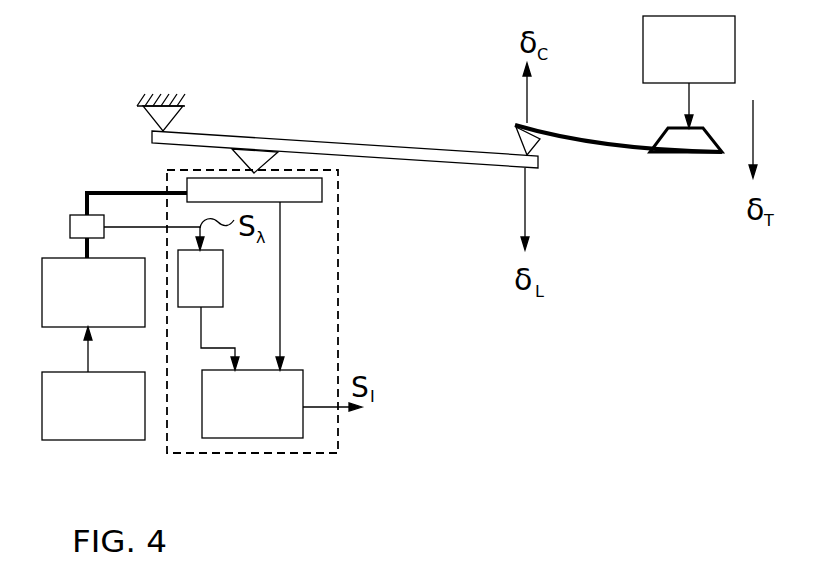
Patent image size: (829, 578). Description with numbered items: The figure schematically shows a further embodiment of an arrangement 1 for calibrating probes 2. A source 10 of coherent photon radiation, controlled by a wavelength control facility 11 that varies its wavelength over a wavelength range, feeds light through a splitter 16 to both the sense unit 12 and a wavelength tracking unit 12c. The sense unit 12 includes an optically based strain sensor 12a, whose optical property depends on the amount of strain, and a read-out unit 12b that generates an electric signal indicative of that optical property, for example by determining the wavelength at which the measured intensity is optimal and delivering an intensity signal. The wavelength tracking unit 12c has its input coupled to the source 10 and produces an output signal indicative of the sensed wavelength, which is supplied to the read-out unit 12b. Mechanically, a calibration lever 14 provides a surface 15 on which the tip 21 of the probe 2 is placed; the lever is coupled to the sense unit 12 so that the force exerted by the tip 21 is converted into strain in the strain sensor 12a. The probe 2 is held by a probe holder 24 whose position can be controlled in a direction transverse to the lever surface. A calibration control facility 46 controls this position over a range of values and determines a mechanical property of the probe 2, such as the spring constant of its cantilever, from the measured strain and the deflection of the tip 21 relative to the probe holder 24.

The arrangement 1 is at (459, 393).
The probe 2 is at (714, 249).
The source of coherent photon radiation 10 is at (93, 292).
The wavelength control facility 11 is at (93, 383).
The sense unit 12 is at (200, 453).
The optically based strain sensor 12a is at (313, 190).
The read-out unit 12b is at (282, 404).
The wavelength tracking unit 12c is at (213, 260).
The calibration lever 14 is at (352, 143).
The surface 15 is at (503, 136).
The splitter 16 is at (77, 225).
The tip 21 is at (538, 152).
The probe holder 24 is at (662, 125).
The calibration control facility 46 is at (689, 72).